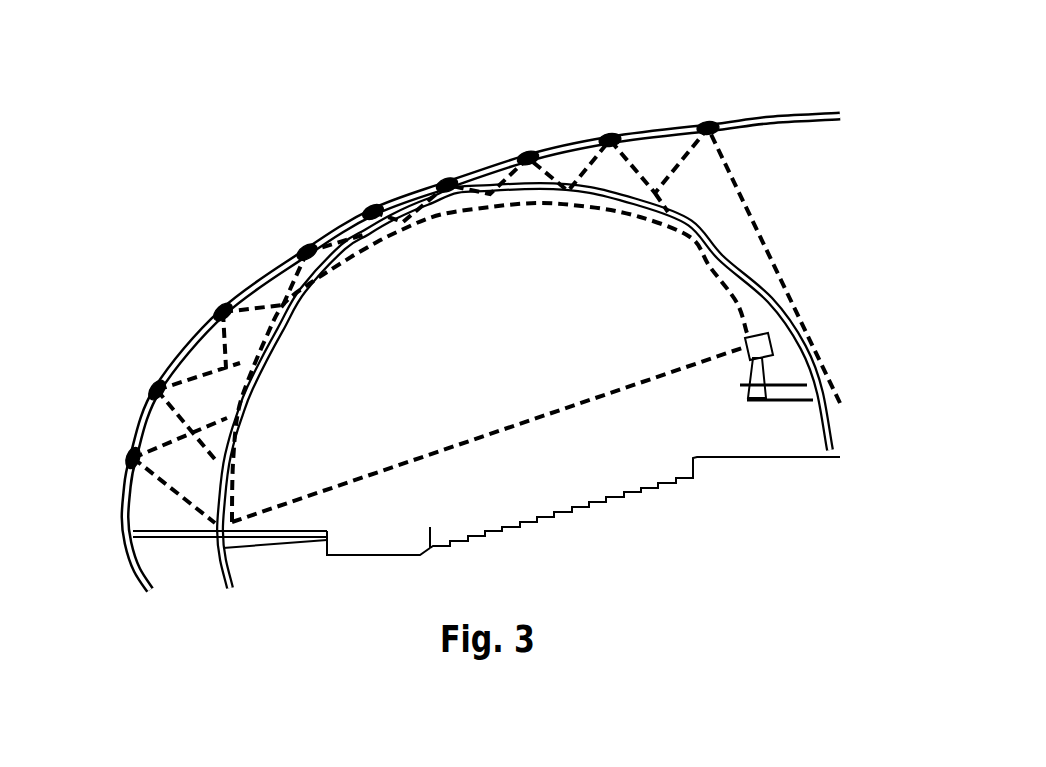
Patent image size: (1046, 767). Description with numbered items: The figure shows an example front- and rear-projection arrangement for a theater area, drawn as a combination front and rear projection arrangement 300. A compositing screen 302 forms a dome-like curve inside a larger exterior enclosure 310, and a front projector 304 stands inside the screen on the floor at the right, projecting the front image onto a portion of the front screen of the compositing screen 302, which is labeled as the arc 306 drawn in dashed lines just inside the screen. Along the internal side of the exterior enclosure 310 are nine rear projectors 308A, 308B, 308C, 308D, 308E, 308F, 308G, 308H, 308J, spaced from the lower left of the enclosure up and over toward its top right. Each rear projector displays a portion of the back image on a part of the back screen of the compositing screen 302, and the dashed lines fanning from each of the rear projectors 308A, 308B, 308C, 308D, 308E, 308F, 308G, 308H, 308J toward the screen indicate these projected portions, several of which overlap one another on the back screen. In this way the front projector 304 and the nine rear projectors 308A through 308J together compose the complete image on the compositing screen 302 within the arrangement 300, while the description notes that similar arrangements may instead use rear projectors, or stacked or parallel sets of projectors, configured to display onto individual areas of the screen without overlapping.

The combination front and rear projection arrangement 300 is at (176, 80).
The compositing screen 302 is at (727, 260).
The front projector 304 is at (764, 408).
The front screen portion 306 is at (377, 244).
The rear projector 308A is at (124, 446).
The rear projector 308B is at (151, 376).
The rear projector 308C is at (218, 301).
The rear projector 308D is at (297, 242).
The rear projector 308E is at (364, 203).
The rear projector 308F is at (437, 175).
The rear projector 308G is at (519, 149).
The rear projector 308H is at (602, 131).
The rear projector 308J is at (703, 120).
The exterior enclosure 310 is at (750, 116).